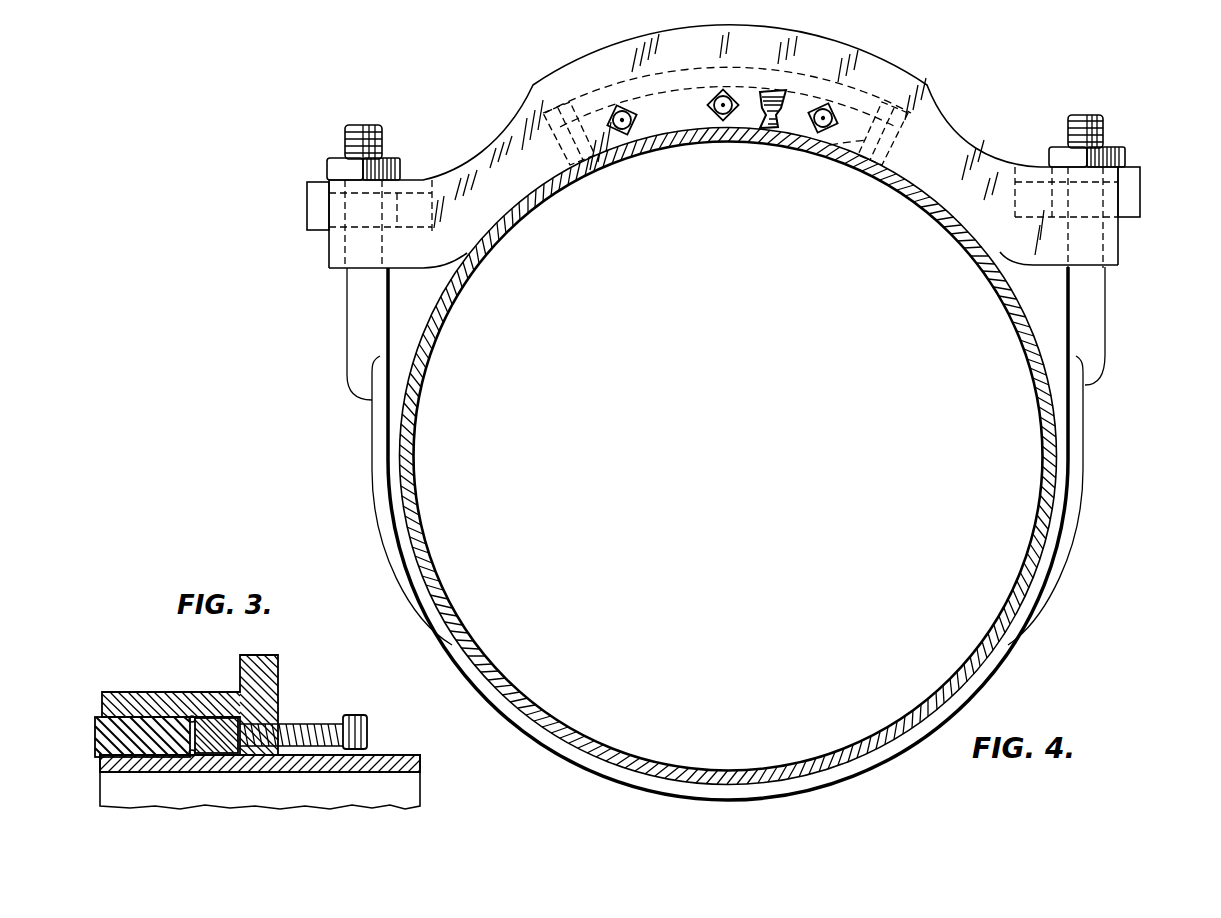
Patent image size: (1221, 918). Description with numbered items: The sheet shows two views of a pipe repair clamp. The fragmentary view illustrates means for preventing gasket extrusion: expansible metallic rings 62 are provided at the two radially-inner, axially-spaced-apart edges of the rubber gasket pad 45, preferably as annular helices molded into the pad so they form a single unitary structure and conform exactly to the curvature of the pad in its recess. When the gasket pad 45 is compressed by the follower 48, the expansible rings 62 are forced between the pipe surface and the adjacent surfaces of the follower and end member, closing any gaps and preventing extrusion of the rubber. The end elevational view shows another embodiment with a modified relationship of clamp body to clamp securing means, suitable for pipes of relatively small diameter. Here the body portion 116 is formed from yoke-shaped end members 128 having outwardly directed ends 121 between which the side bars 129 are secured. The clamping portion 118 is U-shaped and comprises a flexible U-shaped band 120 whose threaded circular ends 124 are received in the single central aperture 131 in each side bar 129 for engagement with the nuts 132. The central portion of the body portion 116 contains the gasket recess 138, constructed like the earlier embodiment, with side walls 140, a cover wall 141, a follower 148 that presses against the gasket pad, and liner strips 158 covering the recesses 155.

In FIG. 4, the body portion 116 is at (462, 157).
In FIG. 4, the clamping portion 118 is at (998, 673).
In FIG. 4, the flexible U-shaped band 120 is at (373, 415).
In FIG. 4, the outwardly directed ends 121 is at (400, 263).
In FIG. 4, the circular ends 124 is at (360, 292).
In FIG. 4, the end members 128 is at (513, 177).
In FIG. 4, the side bars 129 is at (315, 215).
In FIG. 4, the central aperture 131 is at (340, 198).
In FIG. 4, the nuts 132 is at (393, 158).
In FIG. 4, the gasket recess 138 is at (848, 142).
In FIG. 4, the side walls 140 is at (557, 100).
In FIG. 4, the cover wall 141 is at (851, 106).
In FIG. 4, the follower 148 is at (767, 130).
In FIG. 4, the recesses 155 is at (587, 163).
In FIG. 4, the liner strips 158 is at (607, 150).
In FIG. 3, the gasket pad 45 is at (142, 747).
In FIG. 3, the follower 48 is at (223, 730).
In FIG. 3, the expansible metallic rings 62 is at (190, 717).